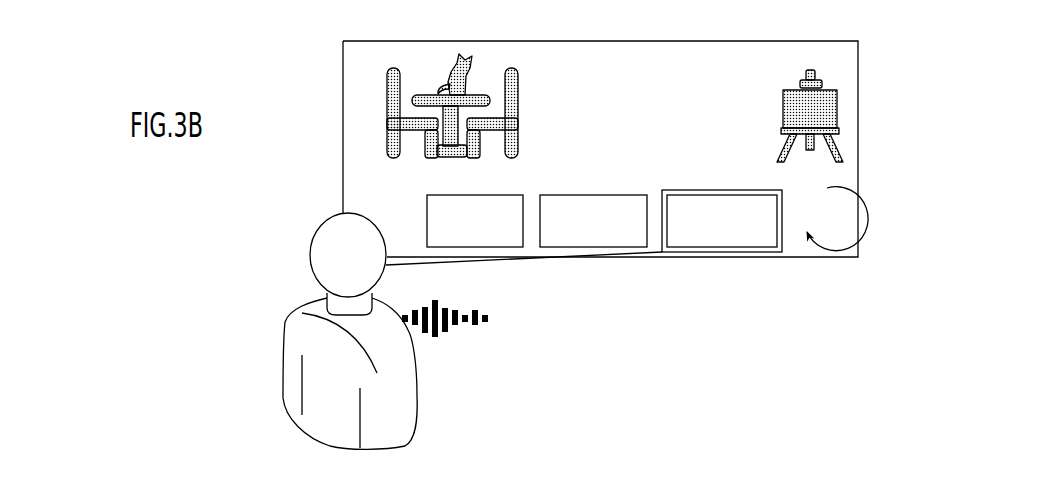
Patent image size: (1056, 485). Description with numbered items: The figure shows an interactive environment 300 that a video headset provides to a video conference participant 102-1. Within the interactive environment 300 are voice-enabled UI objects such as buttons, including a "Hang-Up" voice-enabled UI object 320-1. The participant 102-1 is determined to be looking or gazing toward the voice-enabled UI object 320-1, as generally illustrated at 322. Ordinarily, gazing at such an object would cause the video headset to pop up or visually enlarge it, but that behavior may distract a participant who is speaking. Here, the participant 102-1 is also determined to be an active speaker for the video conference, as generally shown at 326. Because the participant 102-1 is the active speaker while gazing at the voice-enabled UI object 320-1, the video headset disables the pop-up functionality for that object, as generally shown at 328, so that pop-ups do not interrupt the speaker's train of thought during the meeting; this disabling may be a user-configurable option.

The interactive environment 300 is at (341, 138).
The participant 102-1 is at (283, 372).
The gaze toward voice-enabled UI object 322 is at (445, 262).
The voice-enabled UI object 320-1 is at (724, 247).
The disabling of pop-up functionality 328 is at (940, 216).
The active speaker determination 326 is at (456, 339).